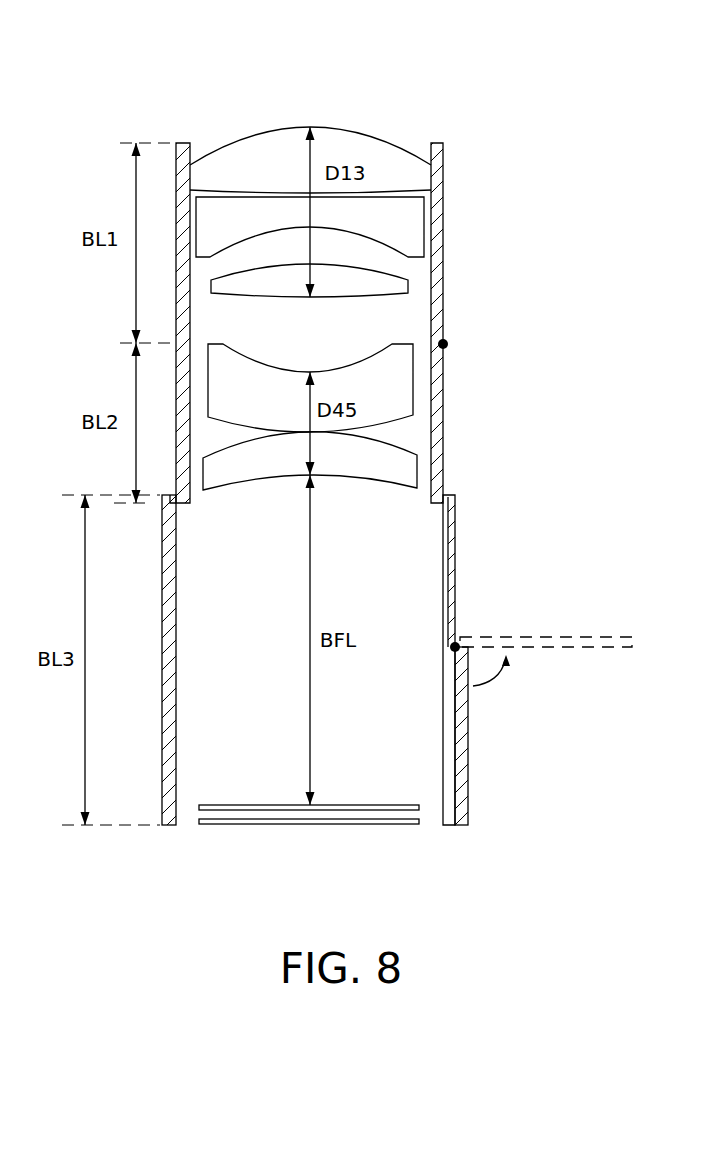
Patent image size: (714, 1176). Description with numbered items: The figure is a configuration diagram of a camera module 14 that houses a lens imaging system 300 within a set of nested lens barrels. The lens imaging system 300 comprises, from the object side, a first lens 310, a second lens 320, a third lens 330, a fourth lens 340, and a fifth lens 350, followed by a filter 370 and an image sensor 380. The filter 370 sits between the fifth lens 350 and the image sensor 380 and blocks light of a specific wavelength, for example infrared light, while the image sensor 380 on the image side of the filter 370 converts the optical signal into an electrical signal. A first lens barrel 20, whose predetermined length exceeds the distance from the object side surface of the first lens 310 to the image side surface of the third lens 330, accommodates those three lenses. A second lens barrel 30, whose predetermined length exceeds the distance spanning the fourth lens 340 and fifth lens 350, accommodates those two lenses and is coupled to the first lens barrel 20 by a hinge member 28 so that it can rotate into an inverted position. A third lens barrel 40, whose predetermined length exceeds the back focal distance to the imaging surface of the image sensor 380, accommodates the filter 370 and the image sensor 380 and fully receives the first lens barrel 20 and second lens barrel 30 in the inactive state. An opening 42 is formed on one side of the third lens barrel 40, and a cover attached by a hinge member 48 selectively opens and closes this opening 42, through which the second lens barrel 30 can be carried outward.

The lens imaging system 300 is at (381, 93).
The camera module 14 is at (548, 223).
The first lens barrel 20 is at (440, 245).
The second lens barrel 30 is at (437, 411).
The hinge member 28 is at (450, 343).
The first lens 310 is at (396, 170).
The second lens 320 is at (388, 213).
The third lens 330 is at (377, 283).
The fourth lens 340 is at (395, 378).
The fifth lens 350 is at (395, 455).
The third lens barrel 40 is at (164, 590).
The hinge member 48 is at (455, 641).
The opening 42 is at (462, 714).
The filter 370 is at (250, 808).
The image sensor 380 is at (347, 824).